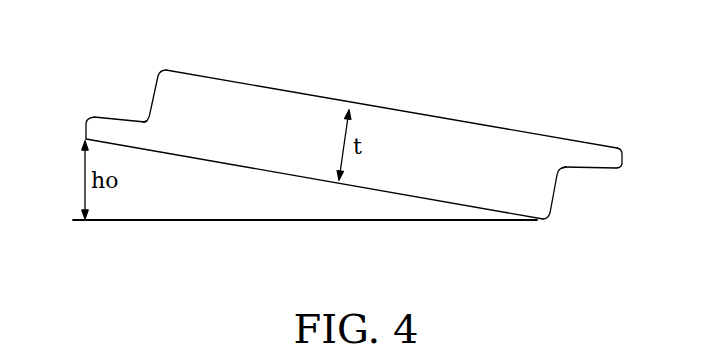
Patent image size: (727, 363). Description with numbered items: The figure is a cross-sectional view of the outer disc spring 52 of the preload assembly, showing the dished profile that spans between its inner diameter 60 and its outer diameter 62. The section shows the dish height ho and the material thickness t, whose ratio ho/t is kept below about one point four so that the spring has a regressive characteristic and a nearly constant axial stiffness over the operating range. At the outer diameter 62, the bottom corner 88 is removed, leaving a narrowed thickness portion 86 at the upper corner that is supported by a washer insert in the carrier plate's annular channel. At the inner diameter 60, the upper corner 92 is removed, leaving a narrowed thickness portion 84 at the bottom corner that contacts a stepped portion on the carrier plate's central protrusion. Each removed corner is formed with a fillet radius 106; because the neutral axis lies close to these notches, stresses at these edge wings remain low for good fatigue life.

The outer disc spring 52 is at (421, 82).
The inner diameter 60 is at (85, 140).
The outer diameter 62 is at (620, 167).
The narrowed thickness portion 84 is at (87, 123).
The narrowed thickness portion 86 is at (595, 145).
The bottom corner 88 is at (573, 184).
The upper corner 92 is at (130, 103).
The fillet radius 106 is at (148, 119).